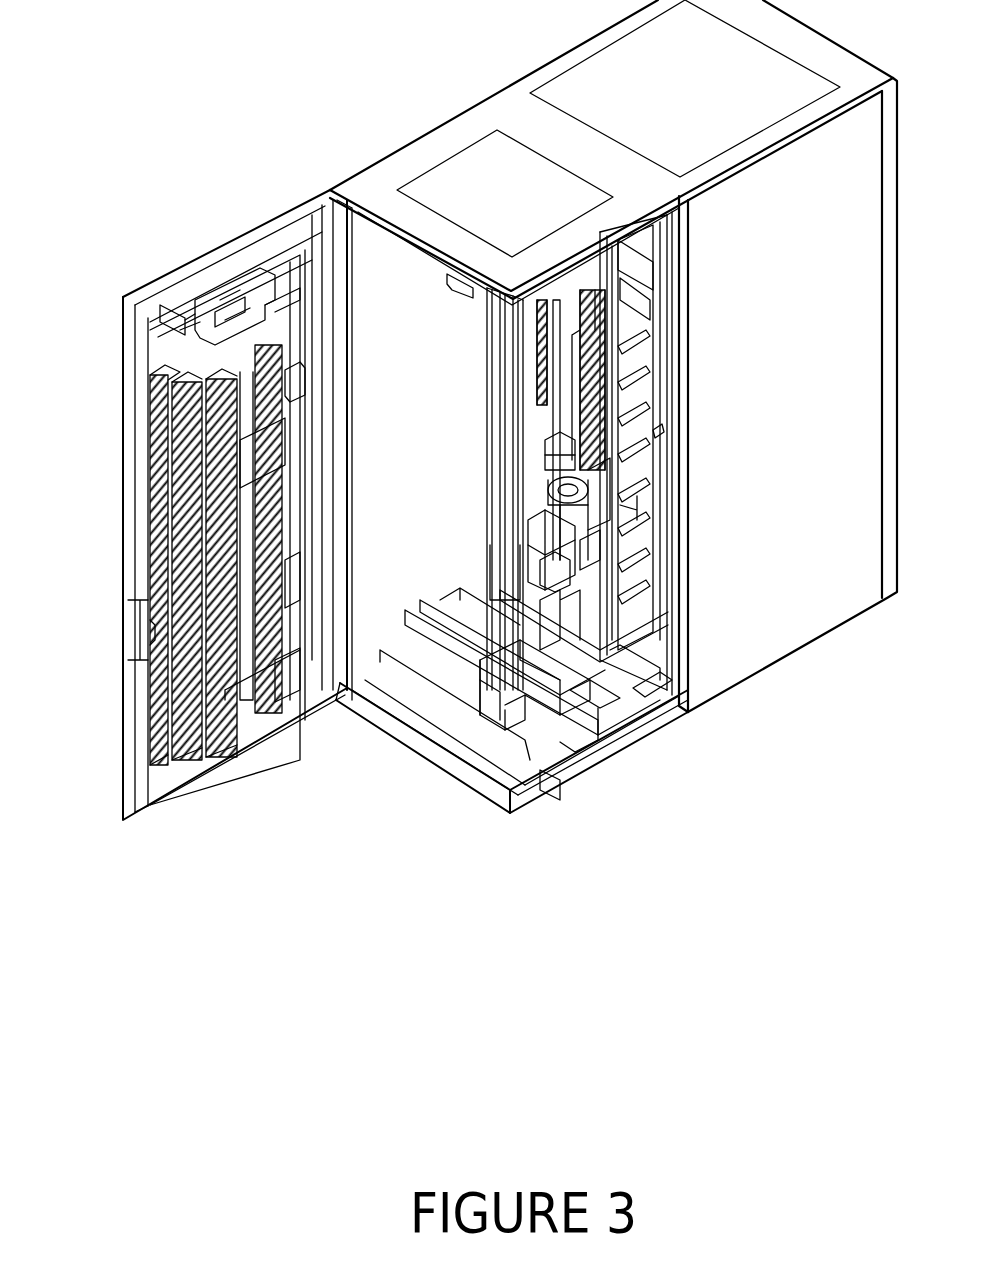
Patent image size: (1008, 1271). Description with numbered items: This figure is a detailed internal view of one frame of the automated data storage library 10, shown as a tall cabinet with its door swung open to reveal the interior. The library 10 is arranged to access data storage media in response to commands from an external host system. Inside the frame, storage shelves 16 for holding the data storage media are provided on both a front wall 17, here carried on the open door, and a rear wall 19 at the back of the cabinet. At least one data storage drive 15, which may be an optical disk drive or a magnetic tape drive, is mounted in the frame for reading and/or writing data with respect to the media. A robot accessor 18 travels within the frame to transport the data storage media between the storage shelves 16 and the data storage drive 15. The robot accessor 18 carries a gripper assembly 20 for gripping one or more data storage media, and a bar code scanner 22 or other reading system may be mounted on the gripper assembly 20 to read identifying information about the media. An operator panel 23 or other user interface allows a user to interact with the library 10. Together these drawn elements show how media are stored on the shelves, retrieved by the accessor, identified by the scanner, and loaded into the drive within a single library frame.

The automated data storage library 10 is at (492, 418).
The data storage drive 15 is at (643, 293).
The storage shelves 16 is at (148, 630).
The front wall 17 is at (130, 481).
The robot accessor 18 is at (560, 727).
The rear wall 19 is at (487, 337).
The gripper assembly 20 is at (637, 510).
The bar code scanner 22 is at (528, 545).
The operator panel 23 is at (298, 320).